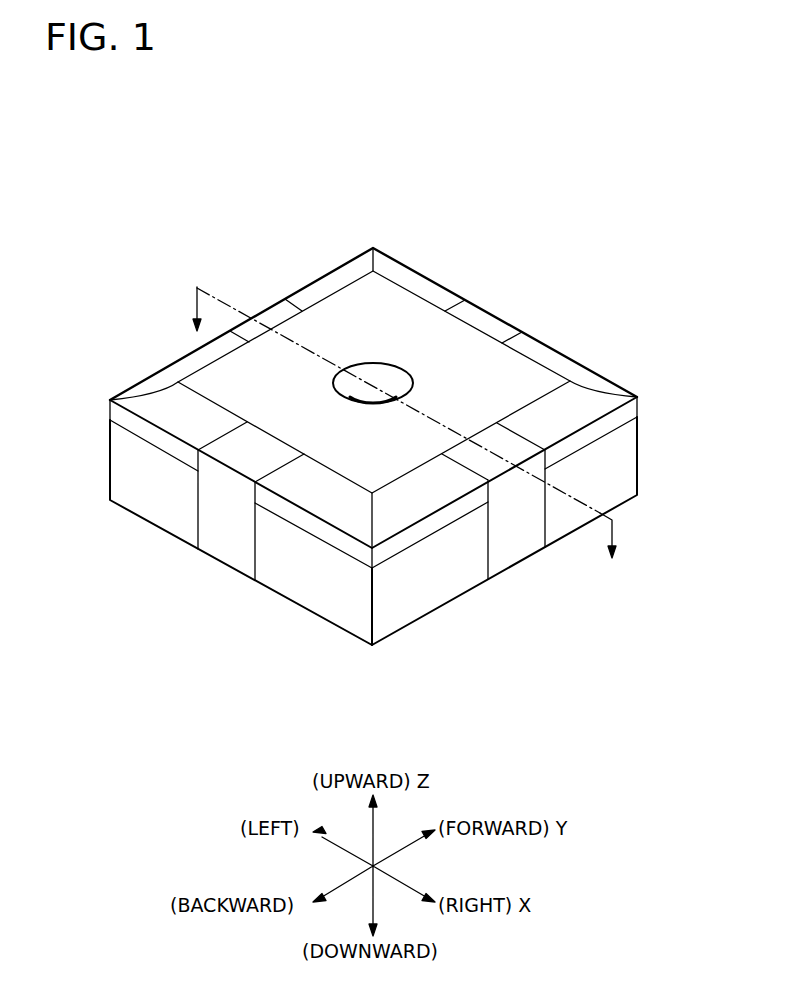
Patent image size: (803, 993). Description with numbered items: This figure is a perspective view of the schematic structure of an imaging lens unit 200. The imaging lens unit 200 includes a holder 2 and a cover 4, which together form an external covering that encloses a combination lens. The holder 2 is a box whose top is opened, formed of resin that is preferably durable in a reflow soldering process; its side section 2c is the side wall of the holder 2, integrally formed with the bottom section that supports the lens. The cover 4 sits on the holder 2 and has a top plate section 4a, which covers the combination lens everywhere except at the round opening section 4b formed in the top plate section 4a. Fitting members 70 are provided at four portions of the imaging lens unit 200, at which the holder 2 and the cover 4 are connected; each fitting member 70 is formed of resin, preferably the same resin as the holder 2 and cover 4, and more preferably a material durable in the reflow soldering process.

The imaging lens unit 200 is at (399, 168).
The holder 2 is at (442, 598).
The side section 2c is at (498, 557).
The cover 4 is at (533, 383).
The top plate section 4a is at (503, 362).
The round opening section 4b is at (367, 364).
The fitting member 70 is at (275, 312).